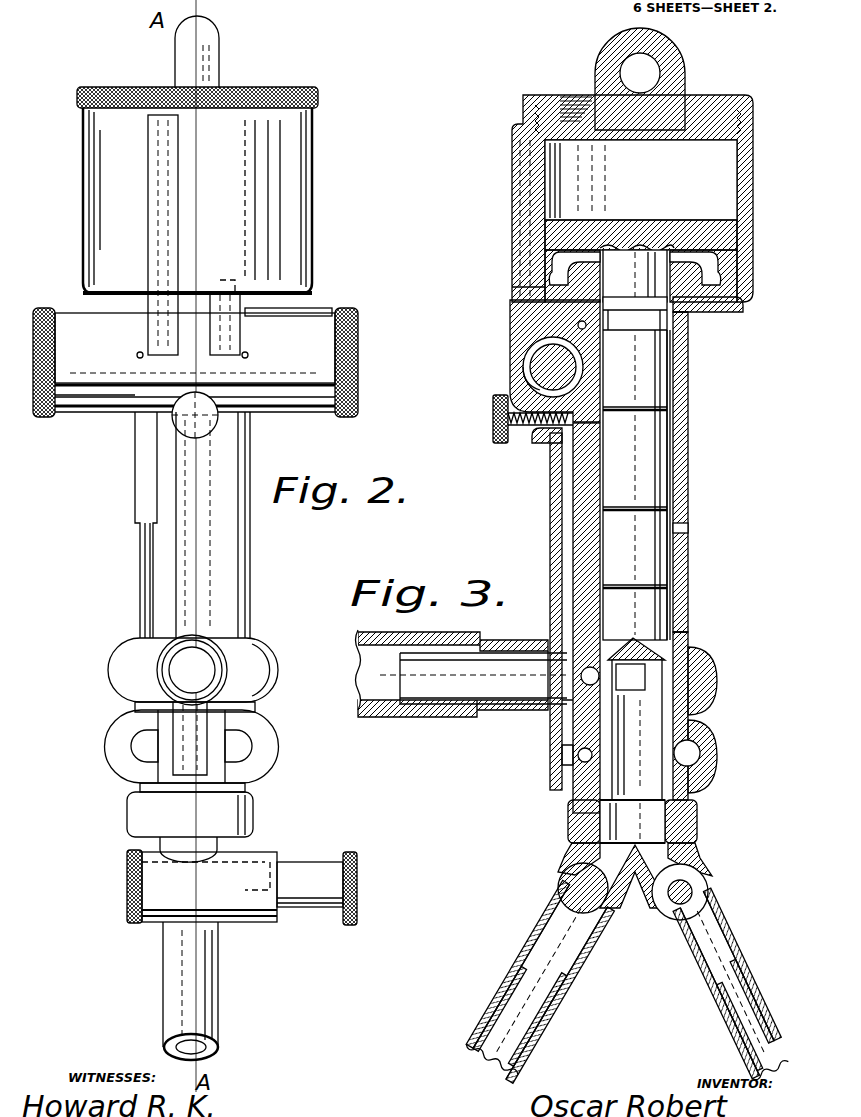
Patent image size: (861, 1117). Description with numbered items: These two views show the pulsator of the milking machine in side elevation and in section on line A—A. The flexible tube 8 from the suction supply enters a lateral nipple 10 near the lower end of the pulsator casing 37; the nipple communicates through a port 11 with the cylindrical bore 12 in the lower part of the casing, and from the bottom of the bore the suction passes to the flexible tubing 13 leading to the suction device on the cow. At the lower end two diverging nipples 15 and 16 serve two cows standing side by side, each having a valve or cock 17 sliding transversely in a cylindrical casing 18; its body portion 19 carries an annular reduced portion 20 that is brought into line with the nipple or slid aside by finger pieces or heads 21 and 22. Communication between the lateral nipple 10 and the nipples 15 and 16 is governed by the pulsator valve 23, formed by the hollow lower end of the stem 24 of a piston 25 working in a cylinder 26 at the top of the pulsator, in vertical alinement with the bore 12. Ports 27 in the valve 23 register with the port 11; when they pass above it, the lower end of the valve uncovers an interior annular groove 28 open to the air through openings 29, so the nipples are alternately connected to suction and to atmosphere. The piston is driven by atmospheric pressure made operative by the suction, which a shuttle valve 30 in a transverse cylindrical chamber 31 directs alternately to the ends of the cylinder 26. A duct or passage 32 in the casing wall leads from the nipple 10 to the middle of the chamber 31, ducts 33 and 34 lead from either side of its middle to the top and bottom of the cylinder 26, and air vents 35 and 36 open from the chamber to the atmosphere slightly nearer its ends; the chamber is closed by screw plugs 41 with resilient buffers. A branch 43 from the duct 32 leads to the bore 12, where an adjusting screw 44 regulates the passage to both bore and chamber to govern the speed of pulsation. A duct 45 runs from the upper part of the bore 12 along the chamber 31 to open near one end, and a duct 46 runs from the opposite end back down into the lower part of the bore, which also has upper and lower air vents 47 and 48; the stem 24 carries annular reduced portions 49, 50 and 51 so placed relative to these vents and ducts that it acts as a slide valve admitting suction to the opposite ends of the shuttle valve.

In FIG. 3, the flexible tube 8 is at (376, 717).
In FIG. 2, the lateral nipple 10 is at (163, 673).
In FIG. 3, the lateral nipple 10 is at (537, 707).
In FIG. 3, the port 11 is at (558, 695).
In FIG. 3, the cylindrical bore 12 is at (690, 603).
In FIG. 3, the flexible tubing 13 is at (463, 1045).
In FIG. 2, the diverging nipple 15 is at (172, 985).
In FIG. 3, the diverging nipple 15 is at (543, 918).
In FIG. 3, the diverging nipple 16 is at (735, 935).
In FIG. 3, the valve or cock 17 is at (560, 883).
In FIG. 2, the cylindrical casing 18 is at (250, 923).
In FIG. 3, the cylindrical casing 18 is at (653, 912).
In FIG. 2, the body portion 19 is at (303, 875).
In FIG. 3, the body portion 19 is at (573, 870).
In FIG. 2, the annular reduced portion 20 is at (263, 877).
In FIG. 3, the annular reduced portion 20 is at (698, 862).
In FIG. 2, the finger piece or head 21 is at (357, 880).
In FIG. 2, the finger piece or head 22 is at (127, 867).
In FIG. 3, the pulsator valve 23 is at (642, 728).
In FIG. 3, the stem 24 is at (653, 393).
In FIG. 3, the piston 25 is at (707, 222).
In FIG. 2, the cylinder 26 is at (310, 156).
In FIG. 3, the cylinder 26 is at (753, 157).
In FIG. 3, the ports 27 is at (668, 677).
In FIG. 3, the interior annular groove 28 is at (585, 757).
In FIG. 2, the openings 29 is at (127, 753).
In FIG. 3, the openings 29 is at (702, 760).
In FIG. 3, the shuttle valve 30 is at (545, 368).
In FIG. 2, the cylindrical chamber 31 is at (310, 357).
In FIG. 3, the cylindrical chamber 31 is at (537, 390).
In FIG. 2, the duct or passage 32 is at (253, 538).
In FIG. 3, the duct or passage 32 is at (567, 500).
In FIG. 2, the duct or passage 33 is at (155, 250).
In FIG. 3, the duct or passage 33 is at (510, 215).
In FIG. 2, the duct or passage 34 is at (237, 278).
In FIG. 3, the duct or passage 34 is at (512, 287).
In FIG. 2, the air vent 35 is at (140, 355).
In FIG. 2, the air vent 36 is at (245, 355).
In FIG. 3, the air vent 36 is at (508, 368).
In FIG. 2, the pulsator casing 37 is at (137, 590).
In FIG. 3, the pulsator casing 37 is at (688, 488).
In FIG. 2, the screw plug 41 is at (358, 377).
In FIG. 2, the branch 43 is at (250, 427).
In FIG. 3, the branch 43 is at (593, 417).
In FIG. 2, the adjusting screw 44 is at (173, 422).
In FIG. 3, the adjusting screw 44 is at (492, 418).
In FIG. 2, the duct 45 is at (317, 313).
In FIG. 3, the duct 45 is at (578, 322).
In FIG. 2, the duct 46 is at (103, 417).
In FIG. 3, the upper air vent 47 is at (687, 307).
In FIG. 3, the lower air vent 48 is at (677, 530).
In FIG. 3, the annular reduced portion 49 is at (673, 455).
In FIG. 3, the annular reduced portion 50 is at (687, 333).
In FIG. 3, the annular reduced portion 51 is at (688, 583).